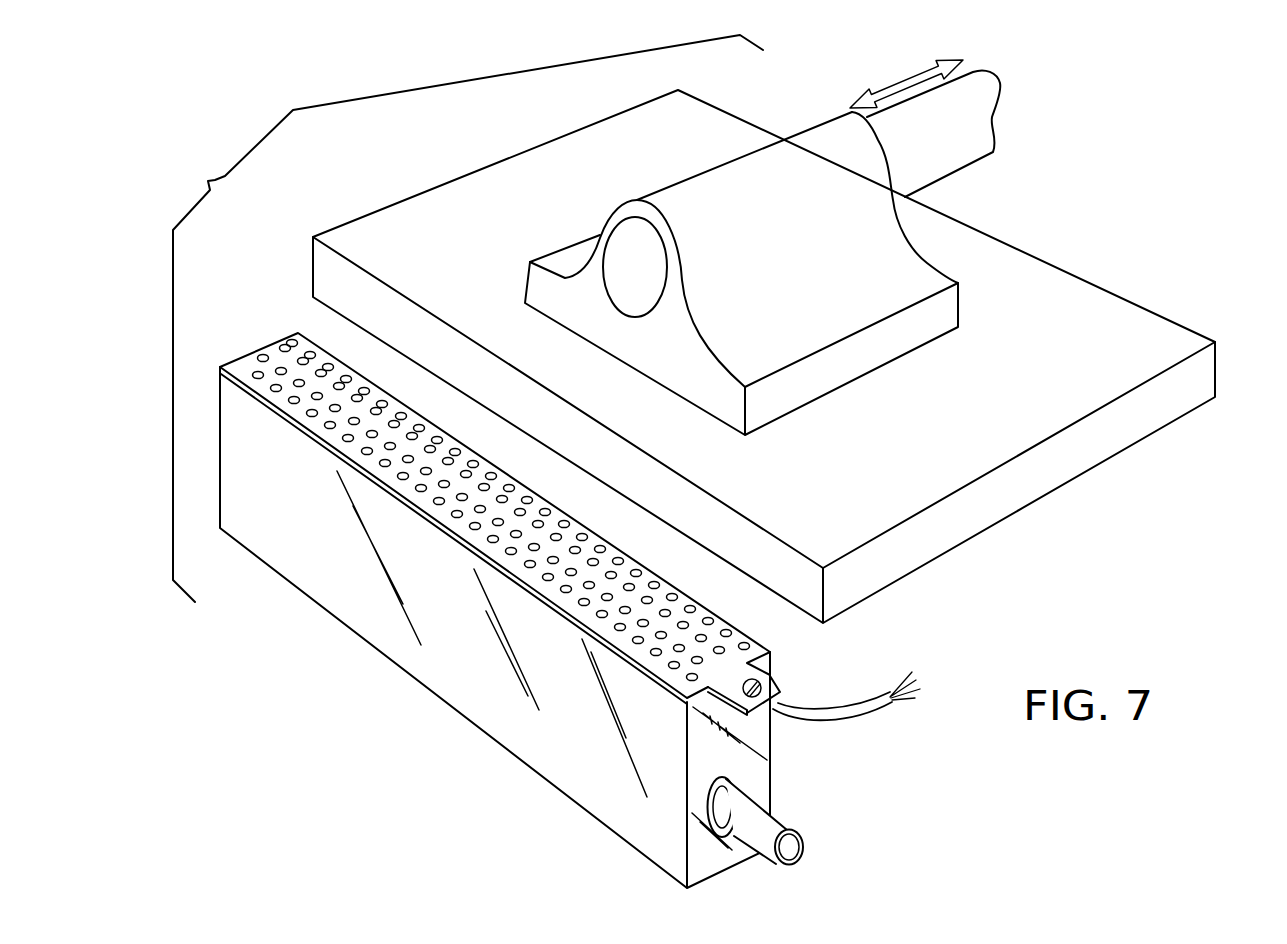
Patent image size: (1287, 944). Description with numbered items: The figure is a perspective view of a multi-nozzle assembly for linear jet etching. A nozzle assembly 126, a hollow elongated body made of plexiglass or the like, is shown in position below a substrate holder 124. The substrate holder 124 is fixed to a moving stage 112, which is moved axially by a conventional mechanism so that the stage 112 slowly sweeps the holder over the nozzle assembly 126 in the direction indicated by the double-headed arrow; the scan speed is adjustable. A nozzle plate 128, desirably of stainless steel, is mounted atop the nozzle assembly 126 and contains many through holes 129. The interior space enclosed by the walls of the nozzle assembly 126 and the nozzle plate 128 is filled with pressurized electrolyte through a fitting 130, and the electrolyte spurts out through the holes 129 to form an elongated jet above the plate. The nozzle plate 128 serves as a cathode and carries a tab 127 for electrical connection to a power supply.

The moving stage 112 is at (1005, 135).
The substrate holder 124 is at (390, 154).
The nozzle assembly 126 is at (364, 699).
The tab 127 is at (778, 689).
The nozzle plate 128 is at (760, 640).
The through holes 129 is at (277, 363).
The fitting 130 is at (800, 826).